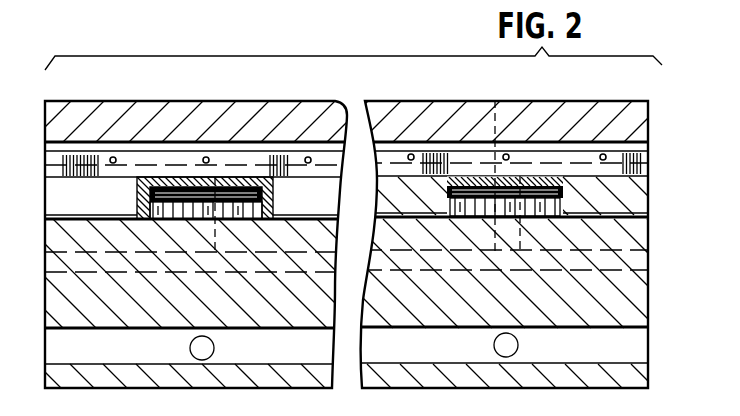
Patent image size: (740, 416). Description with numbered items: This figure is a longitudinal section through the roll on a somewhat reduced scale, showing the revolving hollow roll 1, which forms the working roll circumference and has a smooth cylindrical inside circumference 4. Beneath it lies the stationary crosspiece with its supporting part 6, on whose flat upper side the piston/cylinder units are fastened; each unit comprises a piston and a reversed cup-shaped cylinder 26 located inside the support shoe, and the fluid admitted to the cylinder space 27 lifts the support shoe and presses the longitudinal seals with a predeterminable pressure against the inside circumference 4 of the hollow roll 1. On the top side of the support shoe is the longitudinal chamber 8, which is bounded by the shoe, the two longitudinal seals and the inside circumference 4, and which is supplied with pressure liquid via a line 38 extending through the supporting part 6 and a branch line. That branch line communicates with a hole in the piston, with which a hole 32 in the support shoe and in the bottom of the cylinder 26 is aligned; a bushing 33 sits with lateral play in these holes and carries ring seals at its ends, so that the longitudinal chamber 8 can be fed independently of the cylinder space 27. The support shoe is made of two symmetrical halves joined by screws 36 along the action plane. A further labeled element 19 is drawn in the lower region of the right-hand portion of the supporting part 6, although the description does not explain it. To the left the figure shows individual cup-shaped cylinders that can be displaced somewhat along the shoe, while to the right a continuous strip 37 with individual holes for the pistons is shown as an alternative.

The hollow roll 1 is at (557, 118).
The inside circumference 4 is at (606, 153).
The supporting part 6 is at (579, 303).
The longitudinal chamber 8 is at (163, 144).
The core body 19 is at (396, 356).
The cylinder 26 is at (285, 197).
The cylinder space 27 is at (225, 176).
The hole 32 is at (197, 161).
The bushing 33 is at (203, 188).
The screws 36 is at (506, 153).
The continuous strip 37 is at (395, 196).
The line 38 is at (318, 263).